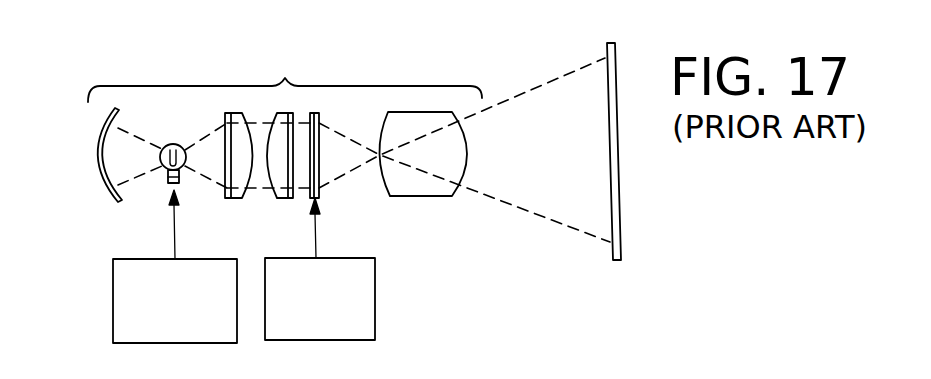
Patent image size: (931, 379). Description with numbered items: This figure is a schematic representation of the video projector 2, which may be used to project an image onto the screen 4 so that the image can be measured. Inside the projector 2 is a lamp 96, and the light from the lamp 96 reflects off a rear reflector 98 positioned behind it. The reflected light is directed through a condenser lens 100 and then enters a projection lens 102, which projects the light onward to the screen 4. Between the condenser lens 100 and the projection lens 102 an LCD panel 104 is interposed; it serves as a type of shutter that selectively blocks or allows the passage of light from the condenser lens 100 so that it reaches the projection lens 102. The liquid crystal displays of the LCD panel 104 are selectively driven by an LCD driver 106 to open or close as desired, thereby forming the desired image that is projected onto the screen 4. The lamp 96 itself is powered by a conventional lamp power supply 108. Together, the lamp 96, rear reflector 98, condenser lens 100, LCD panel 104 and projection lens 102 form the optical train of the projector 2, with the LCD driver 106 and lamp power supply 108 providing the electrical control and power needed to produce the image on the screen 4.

The video projector 2 is at (285, 75).
The screen 4 is at (616, 218).
The lamp 96 is at (168, 146).
The rear reflector 98 is at (112, 184).
The condenser lens 100 is at (268, 180).
The projection lens 102 is at (434, 187).
The LCD panel 104 is at (321, 184).
The LCD driver 106 is at (366, 281).
The lamp power supply 108 is at (118, 296).